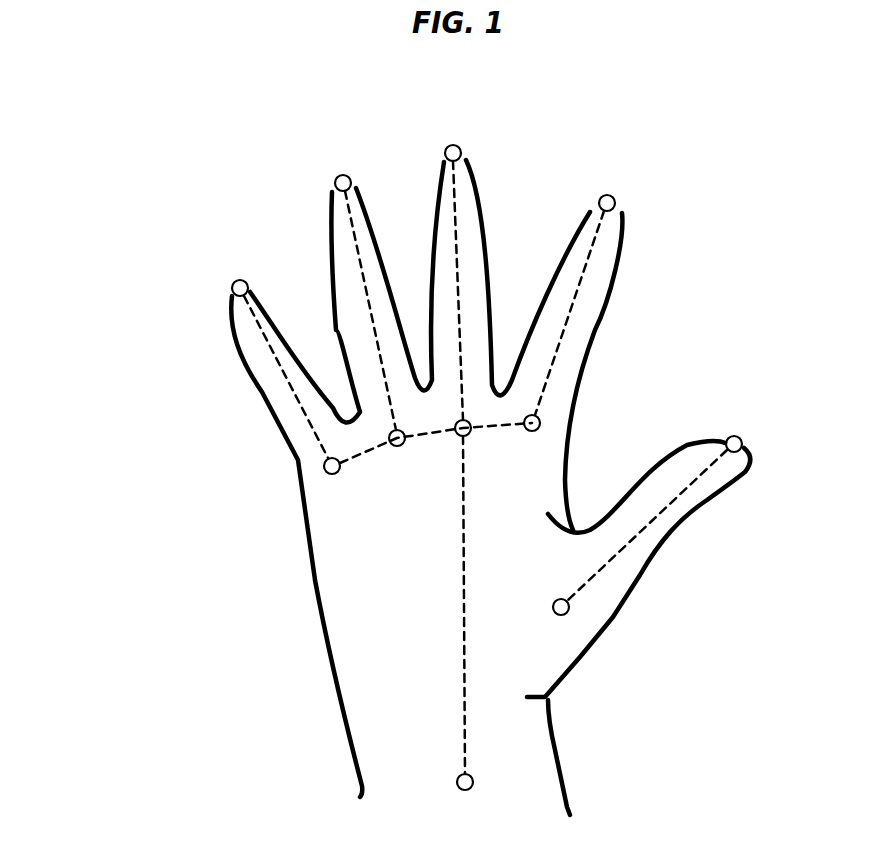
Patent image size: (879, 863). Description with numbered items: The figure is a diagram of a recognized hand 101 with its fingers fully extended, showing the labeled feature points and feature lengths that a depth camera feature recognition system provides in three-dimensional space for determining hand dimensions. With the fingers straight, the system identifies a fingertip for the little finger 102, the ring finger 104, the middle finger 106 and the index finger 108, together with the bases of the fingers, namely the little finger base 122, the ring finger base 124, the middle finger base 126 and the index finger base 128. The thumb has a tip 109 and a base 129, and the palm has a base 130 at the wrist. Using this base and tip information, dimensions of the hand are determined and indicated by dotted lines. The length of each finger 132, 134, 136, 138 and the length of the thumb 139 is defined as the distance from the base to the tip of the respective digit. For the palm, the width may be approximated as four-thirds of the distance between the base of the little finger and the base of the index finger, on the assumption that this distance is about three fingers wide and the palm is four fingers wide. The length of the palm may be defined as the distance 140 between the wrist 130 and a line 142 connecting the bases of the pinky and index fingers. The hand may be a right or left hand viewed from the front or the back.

The hand 101 is at (82, 279).
The little finger fingertip 102 is at (235, 281).
The ring finger fingertip 104 is at (340, 176).
The middle finger fingertip 106 is at (452, 146).
The index finger fingertip 108 is at (612, 199).
The thumb tip 109 is at (738, 443).
The little finger base 122 is at (332, 474).
The ring finger base 124 is at (398, 447).
The middle finger base 126 is at (465, 436).
The index finger base 128 is at (533, 431).
The thumb base 129 is at (569, 608).
The palm base (wrist) 130 is at (470, 788).
The little finger length 132 is at (287, 382).
The ring finger length 134 is at (366, 302).
The middle finger length 136 is at (458, 225).
The index finger length 138 is at (582, 273).
The thumb length 139 is at (638, 540).
The palm length distance 140 is at (452, 626).
The line connecting finger bases 142 is at (490, 424).